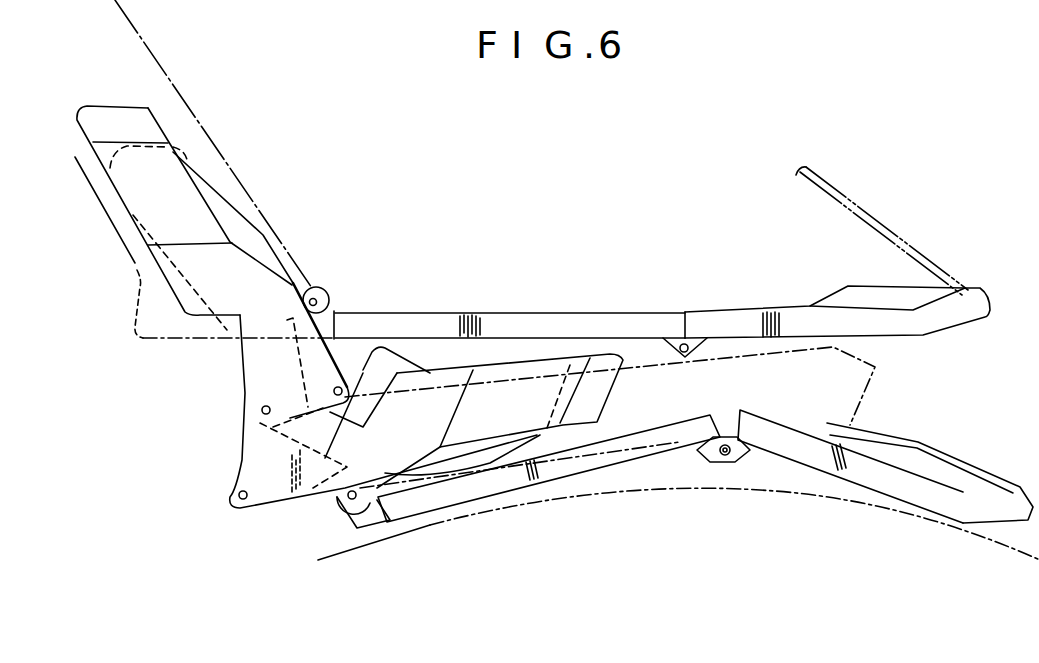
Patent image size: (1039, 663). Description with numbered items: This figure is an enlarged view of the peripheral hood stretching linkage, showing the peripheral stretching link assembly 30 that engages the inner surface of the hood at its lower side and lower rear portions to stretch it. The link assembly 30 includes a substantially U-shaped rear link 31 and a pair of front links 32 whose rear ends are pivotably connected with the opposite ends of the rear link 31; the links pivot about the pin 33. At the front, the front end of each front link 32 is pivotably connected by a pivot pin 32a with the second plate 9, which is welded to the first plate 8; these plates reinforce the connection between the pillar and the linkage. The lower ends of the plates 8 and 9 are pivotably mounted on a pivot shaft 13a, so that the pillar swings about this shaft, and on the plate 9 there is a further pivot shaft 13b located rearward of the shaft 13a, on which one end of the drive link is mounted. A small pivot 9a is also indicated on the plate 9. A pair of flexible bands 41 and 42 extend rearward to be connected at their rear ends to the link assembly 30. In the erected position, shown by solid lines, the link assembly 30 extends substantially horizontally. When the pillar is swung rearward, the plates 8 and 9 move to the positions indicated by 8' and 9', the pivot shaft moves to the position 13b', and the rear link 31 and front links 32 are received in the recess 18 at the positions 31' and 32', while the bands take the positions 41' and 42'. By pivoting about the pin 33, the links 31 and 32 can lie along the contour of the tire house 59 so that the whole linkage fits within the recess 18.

The first plate 8 is at (184, 218).
The second plate 9 is at (261, 285).
The pivot pin of backrest frame 9a is at (322, 291).
The pivot pin 32a is at (334, 313).
The retracted position of first plate 8' is at (474, 379).
The front link 32 is at (510, 304).
The peripheral stretching link assembly 30 is at (633, 302).
The rear link 31 is at (837, 290).
The flexible band 41 is at (888, 231).
The flexible band 42 is at (888, 231).
The pin 33 is at (700, 352).
The retracted position of front link 32' is at (540, 455).
The retracted position of rear link 31' is at (850, 451).
The retracted position of flexible band 41' is at (930, 462).
The retracted position of flexible band 42' is at (930, 462).
The recess 18 is at (755, 466).
The tire house 59 is at (622, 497).
The retracted position of second plate 9' is at (462, 496).
The pivot shaft 13a is at (262, 412).
The pivot shaft 13b is at (258, 372).
The retracted position of pivot shaft 13b' is at (222, 526).